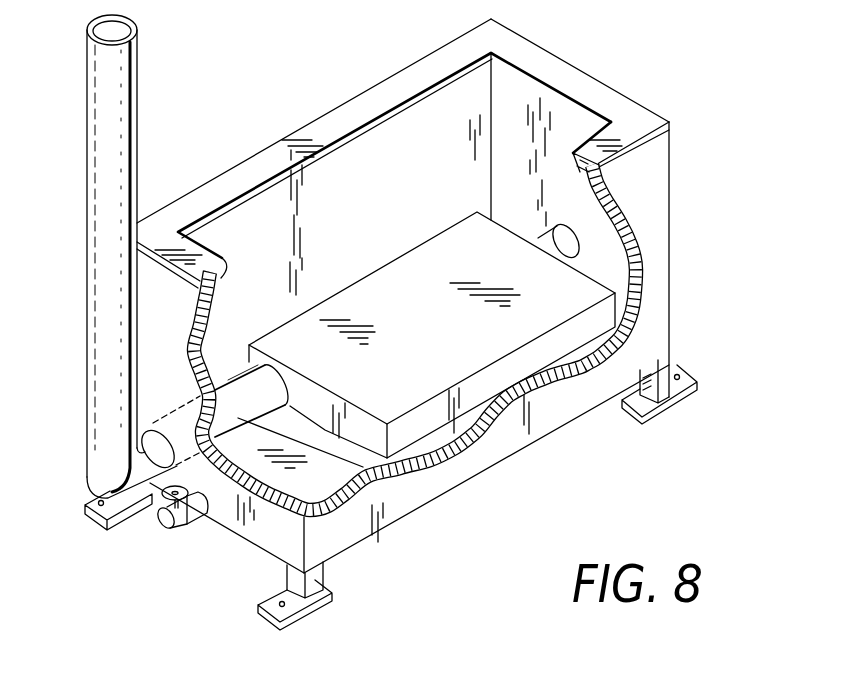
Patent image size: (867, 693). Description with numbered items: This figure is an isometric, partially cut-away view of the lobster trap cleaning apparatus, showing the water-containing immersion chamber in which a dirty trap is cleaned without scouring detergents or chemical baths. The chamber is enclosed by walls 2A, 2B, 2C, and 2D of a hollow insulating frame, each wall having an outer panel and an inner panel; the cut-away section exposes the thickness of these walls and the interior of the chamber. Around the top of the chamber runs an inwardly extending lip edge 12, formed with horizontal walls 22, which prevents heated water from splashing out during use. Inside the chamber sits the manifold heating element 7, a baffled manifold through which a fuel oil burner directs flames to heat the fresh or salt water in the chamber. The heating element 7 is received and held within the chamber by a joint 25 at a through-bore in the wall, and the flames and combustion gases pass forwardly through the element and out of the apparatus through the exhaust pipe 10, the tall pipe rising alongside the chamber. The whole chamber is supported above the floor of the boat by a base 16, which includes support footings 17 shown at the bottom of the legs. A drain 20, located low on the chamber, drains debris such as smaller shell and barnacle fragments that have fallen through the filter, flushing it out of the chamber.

The wall 2A is at (527, 147).
The wall 2B is at (163, 318).
The wall 2C is at (390, 158).
The wall 2D is at (653, 197).
The manifold heating element 7 is at (398, 328).
The exhaust pipe 10 is at (113, 116).
The inwardly extending lip edge 12 is at (348, 132).
The base 16 is at (317, 574).
The support footings 17 is at (260, 610).
The drain 20 is at (160, 526).
The horizontal walls 22 is at (259, 190).
The joint 25 is at (292, 400).